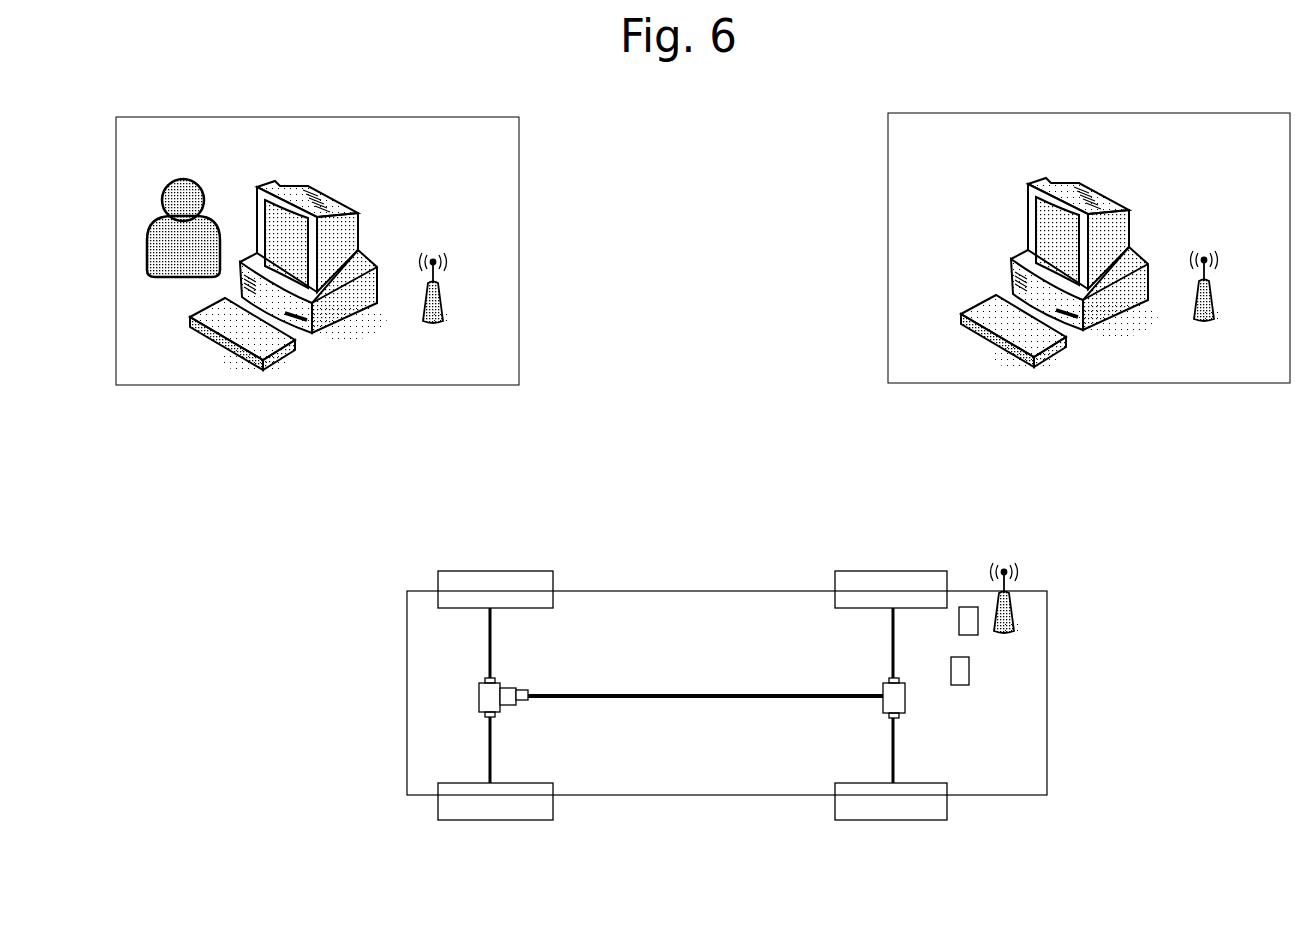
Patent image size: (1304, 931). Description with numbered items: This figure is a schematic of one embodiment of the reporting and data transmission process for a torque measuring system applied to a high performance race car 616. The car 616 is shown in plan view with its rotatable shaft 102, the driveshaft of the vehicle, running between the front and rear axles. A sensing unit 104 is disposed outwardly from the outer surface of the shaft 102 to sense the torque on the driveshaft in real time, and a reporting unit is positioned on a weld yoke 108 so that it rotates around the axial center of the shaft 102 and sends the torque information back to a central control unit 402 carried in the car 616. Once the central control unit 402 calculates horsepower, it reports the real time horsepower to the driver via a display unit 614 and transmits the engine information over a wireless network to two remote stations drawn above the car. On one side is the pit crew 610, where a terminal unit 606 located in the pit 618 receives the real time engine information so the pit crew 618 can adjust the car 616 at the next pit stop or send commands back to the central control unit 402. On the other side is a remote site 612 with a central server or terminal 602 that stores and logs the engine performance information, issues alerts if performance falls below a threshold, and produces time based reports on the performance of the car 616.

The pit crew 610 is at (476, 110).
The remote site 612 is at (1203, 102).
The pit 618 is at (190, 171).
The terminal unit 606 is at (298, 181).
The central server or terminal 602 is at (1068, 179).
The race car 616 is at (667, 570).
The rotatable shaft 102 is at (748, 691).
The sensing unit 104 is at (528, 686).
The weld yoke 108 is at (527, 707).
The central control unit 402 is at (972, 601).
The display unit 614 is at (957, 691).